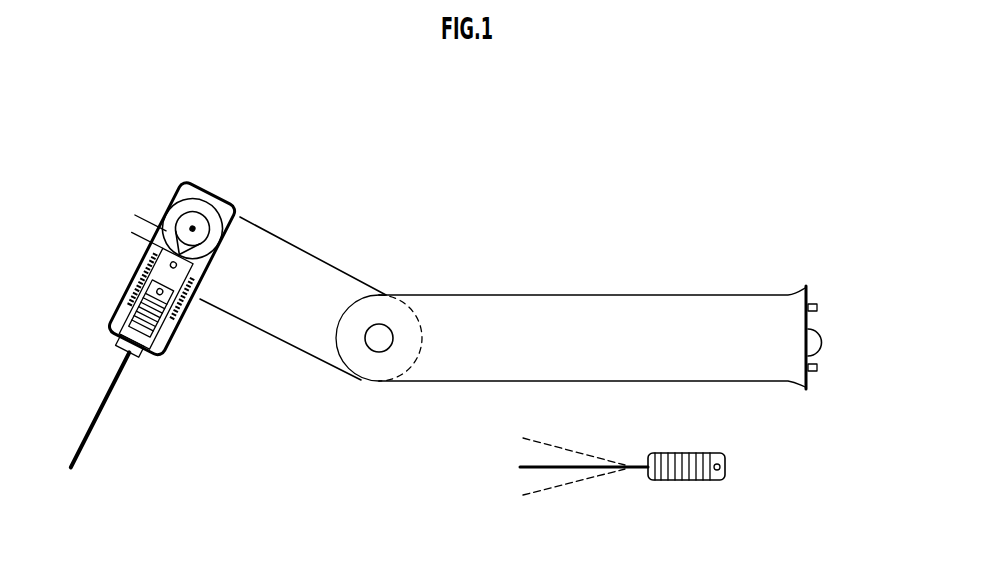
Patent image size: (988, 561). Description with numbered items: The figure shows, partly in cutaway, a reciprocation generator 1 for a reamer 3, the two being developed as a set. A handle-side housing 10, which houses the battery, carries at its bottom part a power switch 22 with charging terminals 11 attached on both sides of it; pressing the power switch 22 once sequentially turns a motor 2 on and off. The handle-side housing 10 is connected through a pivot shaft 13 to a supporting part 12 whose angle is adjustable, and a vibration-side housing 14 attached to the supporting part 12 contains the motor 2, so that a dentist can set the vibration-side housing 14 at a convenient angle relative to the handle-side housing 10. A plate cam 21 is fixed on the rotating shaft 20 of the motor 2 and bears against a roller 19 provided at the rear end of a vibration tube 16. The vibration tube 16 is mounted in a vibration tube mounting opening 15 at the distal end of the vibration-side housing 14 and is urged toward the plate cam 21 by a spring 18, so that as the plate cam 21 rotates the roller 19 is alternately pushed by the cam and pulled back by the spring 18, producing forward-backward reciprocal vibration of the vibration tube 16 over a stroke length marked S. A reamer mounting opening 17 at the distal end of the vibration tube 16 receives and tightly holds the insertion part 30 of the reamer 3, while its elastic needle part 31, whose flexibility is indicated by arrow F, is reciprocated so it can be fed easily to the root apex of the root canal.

The reciprocation generator 1 is at (836, 267).
The motor 2 is at (205, 191).
The reamer 3 is at (209, 454).
The handle-side housing 10 is at (604, 329).
The charging terminals 11 is at (819, 369).
The supporting part 12 is at (290, 272).
The pivot shaft 13 is at (379, 346).
The vibration-side housing 14 is at (156, 298).
The vibration tube mounting opening 15 is at (151, 308).
The vibration tube 16 is at (148, 231).
The reamer mounting opening 17 is at (141, 280).
The spring 18 is at (181, 299).
The roller 19 is at (172, 268).
The rotating shaft 20 is at (189, 234).
The plate cam 21 is at (192, 228).
The power switch 22 is at (819, 342).
The insertion part 30 is at (163, 359).
The needle part 31 is at (97, 425).